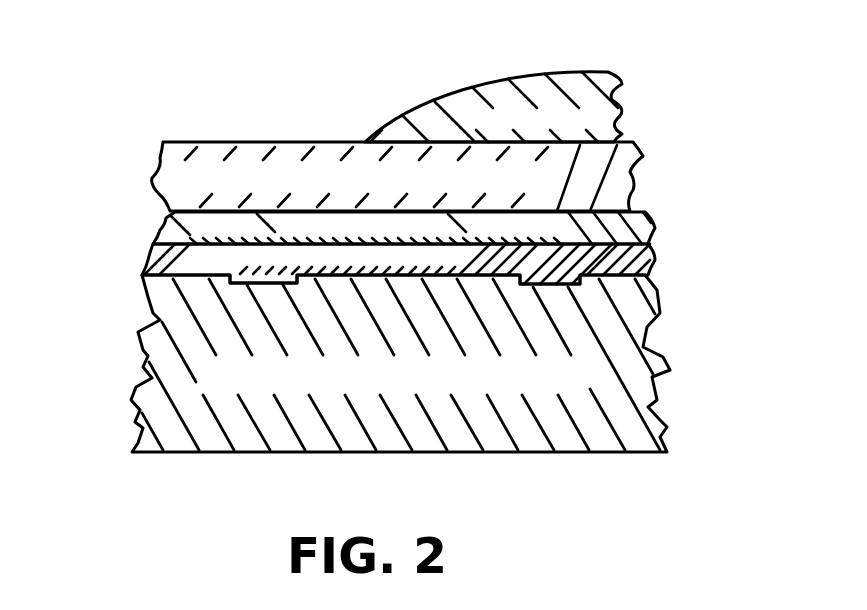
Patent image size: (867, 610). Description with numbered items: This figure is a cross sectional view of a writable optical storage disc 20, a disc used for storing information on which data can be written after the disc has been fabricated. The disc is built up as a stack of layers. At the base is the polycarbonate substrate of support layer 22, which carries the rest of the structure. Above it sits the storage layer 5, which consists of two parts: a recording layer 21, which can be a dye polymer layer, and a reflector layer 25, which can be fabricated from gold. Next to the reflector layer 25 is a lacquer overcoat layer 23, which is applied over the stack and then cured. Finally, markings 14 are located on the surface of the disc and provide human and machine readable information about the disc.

The storage layer 5 is at (147, 217).
The markings 14 is at (622, 97).
The writable optical storage disc 20 is at (122, 389).
The recording layer 21 is at (655, 263).
The polycarbonate substrate of support layer 22 is at (660, 352).
The lacquer overcoat layer 23 is at (633, 172).
The reflector layer 25 is at (645, 225).